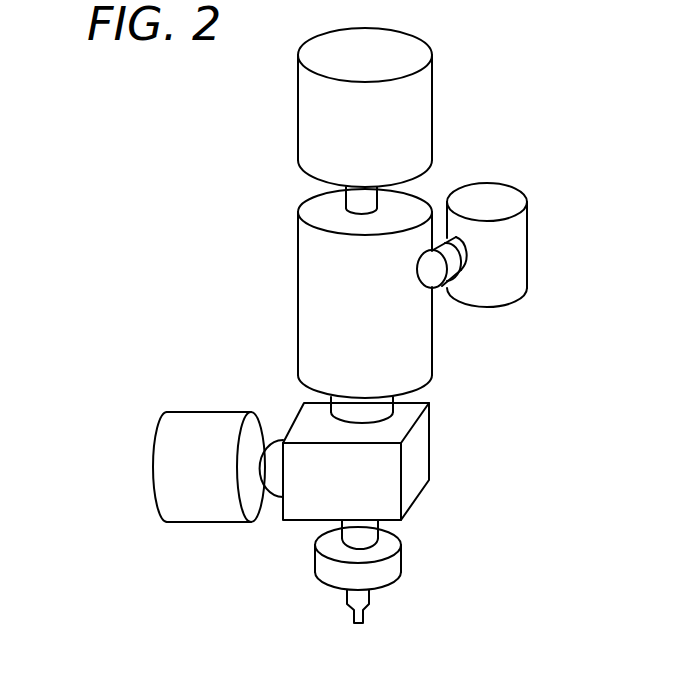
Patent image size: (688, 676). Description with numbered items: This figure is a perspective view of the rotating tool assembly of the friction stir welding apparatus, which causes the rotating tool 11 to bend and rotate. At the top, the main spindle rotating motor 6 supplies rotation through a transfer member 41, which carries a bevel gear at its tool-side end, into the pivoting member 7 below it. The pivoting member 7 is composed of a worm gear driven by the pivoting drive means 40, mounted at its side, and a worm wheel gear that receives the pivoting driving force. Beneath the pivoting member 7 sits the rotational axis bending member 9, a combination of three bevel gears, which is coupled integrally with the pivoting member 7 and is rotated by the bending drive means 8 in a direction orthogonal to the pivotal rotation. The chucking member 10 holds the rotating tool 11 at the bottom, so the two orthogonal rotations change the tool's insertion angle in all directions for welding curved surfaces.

The main spindle rotating motor 6 is at (298, 85).
The transfer member 41 is at (347, 200).
The pivoting member 7 is at (298, 297).
The pivoting drive means 40 is at (498, 193).
The bending drive means 8 is at (215, 412).
The rotational axis bending member 9 is at (428, 450).
The chucking member 10 is at (397, 562).
The rotating tool 11 is at (353, 617).